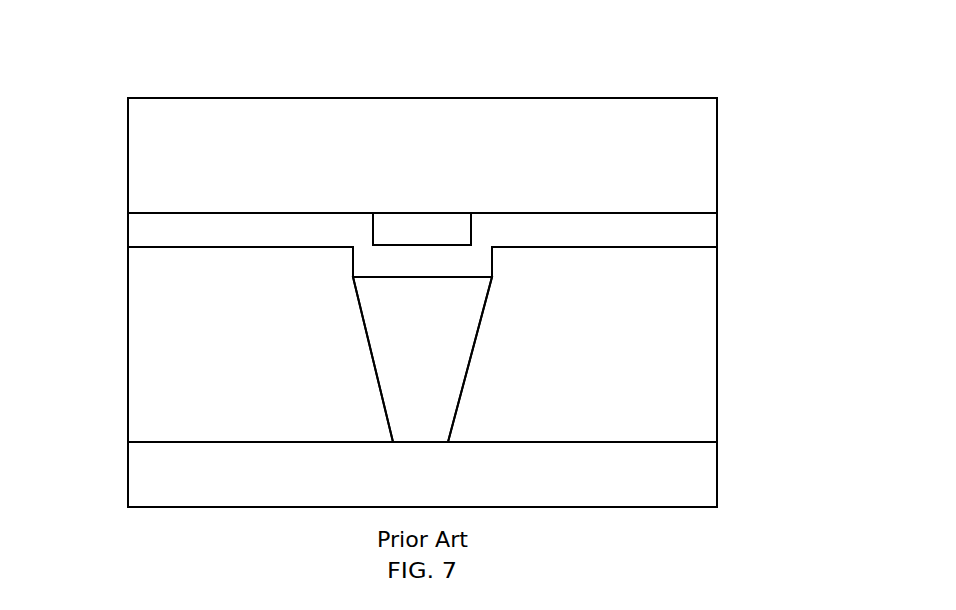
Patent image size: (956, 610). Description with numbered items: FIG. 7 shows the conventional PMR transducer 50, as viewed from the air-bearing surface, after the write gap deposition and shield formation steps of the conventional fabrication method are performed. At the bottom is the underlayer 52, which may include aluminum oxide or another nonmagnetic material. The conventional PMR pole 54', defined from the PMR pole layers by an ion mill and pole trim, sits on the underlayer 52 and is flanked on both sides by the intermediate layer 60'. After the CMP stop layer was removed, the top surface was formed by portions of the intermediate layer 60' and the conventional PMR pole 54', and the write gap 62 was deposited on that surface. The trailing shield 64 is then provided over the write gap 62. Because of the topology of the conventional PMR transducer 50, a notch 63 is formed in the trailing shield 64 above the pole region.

The conventional PMR transducer 50 is at (437, 62).
The underlayer 52 is at (717, 477).
The conventional PMR pole 54' is at (286, 359).
The intermediate layer 60' is at (423, 339).
The write gap 62 is at (717, 228).
The notch 63 is at (516, 220).
The trailing shield 64 is at (128, 160).